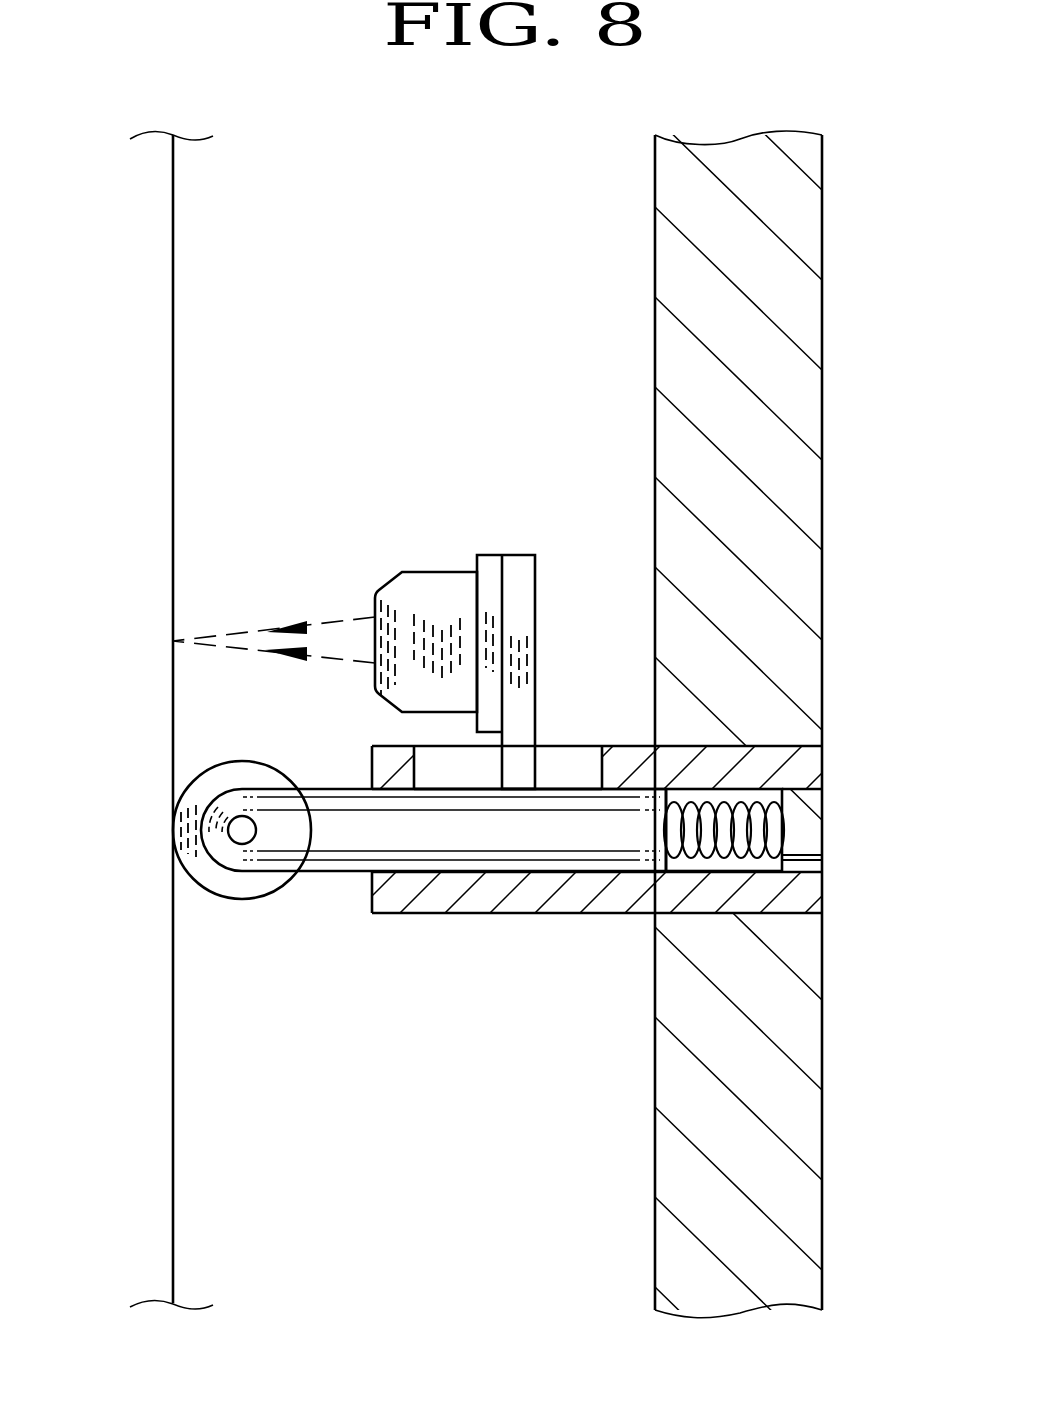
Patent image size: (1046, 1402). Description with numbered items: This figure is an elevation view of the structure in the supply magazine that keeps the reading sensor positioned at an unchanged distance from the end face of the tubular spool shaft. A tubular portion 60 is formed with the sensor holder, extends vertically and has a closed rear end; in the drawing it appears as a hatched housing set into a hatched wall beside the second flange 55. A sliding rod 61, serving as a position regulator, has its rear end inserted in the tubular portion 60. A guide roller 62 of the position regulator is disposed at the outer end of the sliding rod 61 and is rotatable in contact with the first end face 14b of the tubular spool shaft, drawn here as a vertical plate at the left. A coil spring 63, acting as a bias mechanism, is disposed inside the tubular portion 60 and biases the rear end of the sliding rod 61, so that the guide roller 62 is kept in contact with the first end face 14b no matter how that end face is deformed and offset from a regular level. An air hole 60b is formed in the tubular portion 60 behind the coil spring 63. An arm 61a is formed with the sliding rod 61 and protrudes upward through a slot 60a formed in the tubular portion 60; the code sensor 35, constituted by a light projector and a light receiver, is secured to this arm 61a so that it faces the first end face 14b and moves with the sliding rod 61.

The first end face 14b is at (173, 323).
The code sensor 35 is at (440, 572).
The second flange 55 is at (822, 492).
The tubular portion 60 is at (516, 916).
The slot 60a is at (570, 760).
The air hole 60b is at (822, 857).
The sliding rod 61 is at (333, 873).
The arm 61a is at (520, 555).
The guide roller 62 is at (197, 867).
The coil spring 63 is at (780, 781).